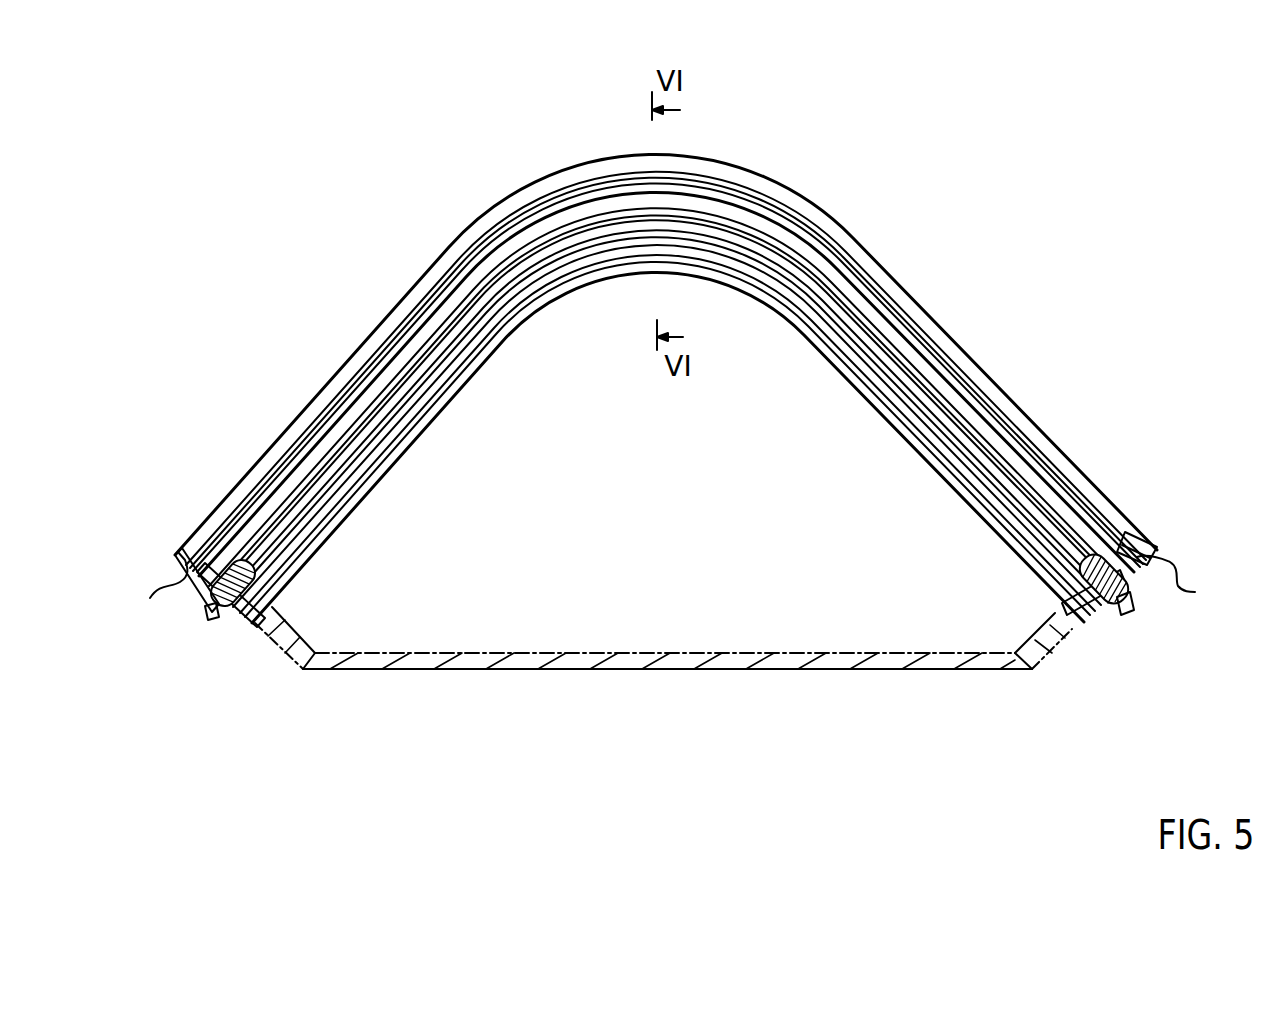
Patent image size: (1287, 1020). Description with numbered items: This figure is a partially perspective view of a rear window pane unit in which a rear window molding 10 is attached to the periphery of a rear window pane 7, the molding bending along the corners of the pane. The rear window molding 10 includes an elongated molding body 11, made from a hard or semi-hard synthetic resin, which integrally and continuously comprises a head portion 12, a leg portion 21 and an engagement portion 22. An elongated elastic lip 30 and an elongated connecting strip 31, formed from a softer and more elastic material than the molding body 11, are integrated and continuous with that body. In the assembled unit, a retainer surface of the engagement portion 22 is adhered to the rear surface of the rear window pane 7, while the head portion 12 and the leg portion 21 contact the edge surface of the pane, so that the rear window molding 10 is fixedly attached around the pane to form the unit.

The rear window pane 7 is at (662, 675).
The rear window molding 10 is at (912, 286).
The molding body 11 is at (148, 706).
The head portion 12 is at (207, 615).
The leg portion 21 is at (226, 625).
The engagement portion 22 is at (250, 630).
The elastic lip 30 is at (152, 598).
The connecting strip 31 is at (205, 548).